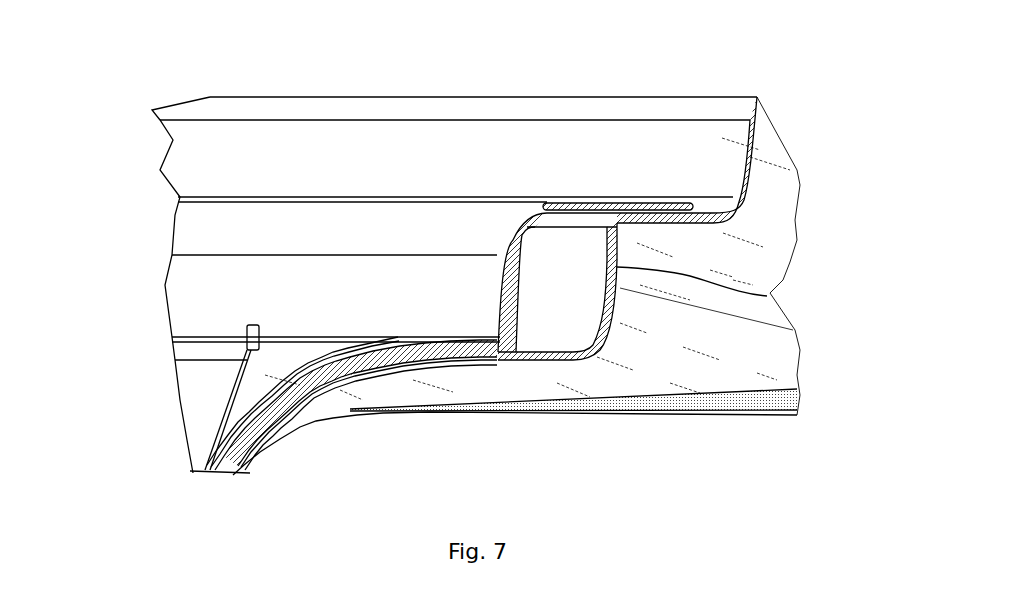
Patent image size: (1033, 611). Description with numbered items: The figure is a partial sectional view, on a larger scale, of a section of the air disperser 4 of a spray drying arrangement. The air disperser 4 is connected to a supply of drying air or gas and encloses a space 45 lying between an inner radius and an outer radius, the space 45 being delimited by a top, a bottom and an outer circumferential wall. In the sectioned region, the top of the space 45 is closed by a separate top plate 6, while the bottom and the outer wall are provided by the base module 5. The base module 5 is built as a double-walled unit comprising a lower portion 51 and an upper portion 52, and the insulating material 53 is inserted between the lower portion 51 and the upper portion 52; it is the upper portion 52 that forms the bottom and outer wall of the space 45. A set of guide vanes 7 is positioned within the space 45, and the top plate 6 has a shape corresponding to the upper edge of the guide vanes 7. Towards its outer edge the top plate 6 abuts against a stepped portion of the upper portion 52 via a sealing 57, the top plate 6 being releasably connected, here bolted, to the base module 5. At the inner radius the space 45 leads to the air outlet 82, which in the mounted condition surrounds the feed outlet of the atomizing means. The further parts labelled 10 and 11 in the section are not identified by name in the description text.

The air disperser 4 is at (158, 91).
The base module 5 is at (737, 418).
The top plate 6 is at (517, 238).
The guide vanes 7 is at (510, 327).
The support beam 10 is at (503, 336).
The reinforcement layer 11 is at (343, 362).
The space 45 is at (603, 265).
The lower portion 51 is at (787, 390).
The upper portion 52 is at (767, 296).
The insulating material 53 is at (763, 220).
The sealing 57 is at (738, 209).
The air outlet 82 is at (250, 472).